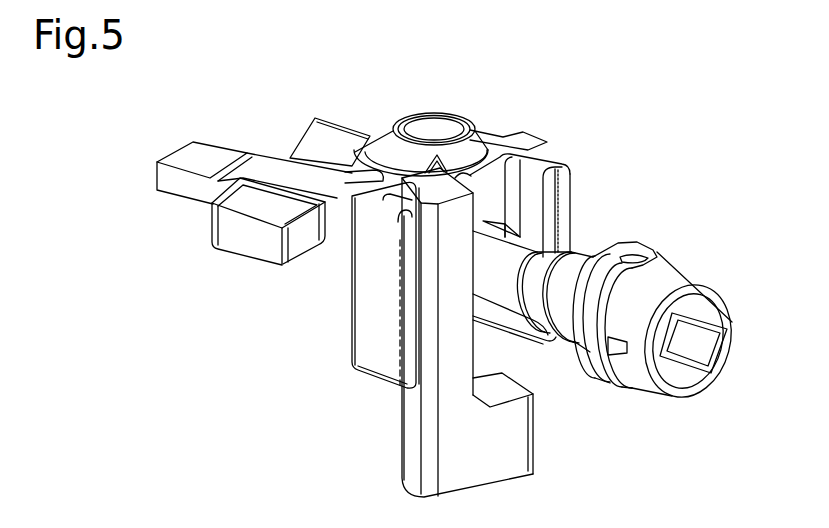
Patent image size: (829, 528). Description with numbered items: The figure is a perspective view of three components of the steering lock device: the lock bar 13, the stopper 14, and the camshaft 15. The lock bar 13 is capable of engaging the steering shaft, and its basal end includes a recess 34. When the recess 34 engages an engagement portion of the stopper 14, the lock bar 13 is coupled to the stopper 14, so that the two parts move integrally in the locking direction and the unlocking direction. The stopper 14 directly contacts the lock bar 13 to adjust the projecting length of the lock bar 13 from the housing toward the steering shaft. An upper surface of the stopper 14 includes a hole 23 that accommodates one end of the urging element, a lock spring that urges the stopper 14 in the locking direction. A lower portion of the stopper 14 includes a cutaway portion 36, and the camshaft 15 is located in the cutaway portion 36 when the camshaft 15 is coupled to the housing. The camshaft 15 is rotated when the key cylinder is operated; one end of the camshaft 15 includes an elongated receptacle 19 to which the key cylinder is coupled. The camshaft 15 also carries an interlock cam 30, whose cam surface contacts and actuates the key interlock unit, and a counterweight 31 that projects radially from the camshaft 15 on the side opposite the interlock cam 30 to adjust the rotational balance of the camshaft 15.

The lock bar 13 is at (402, 450).
The stopper 14 is at (351, 338).
The camshaft 15 is at (527, 257).
The elongated receptacle 19 is at (688, 311).
The hole 23 is at (433, 119).
The interlock cam 30 is at (346, 125).
The counterweight 31 is at (245, 258).
The recess 34 is at (404, 234).
The cutaway portion 36 is at (502, 320).